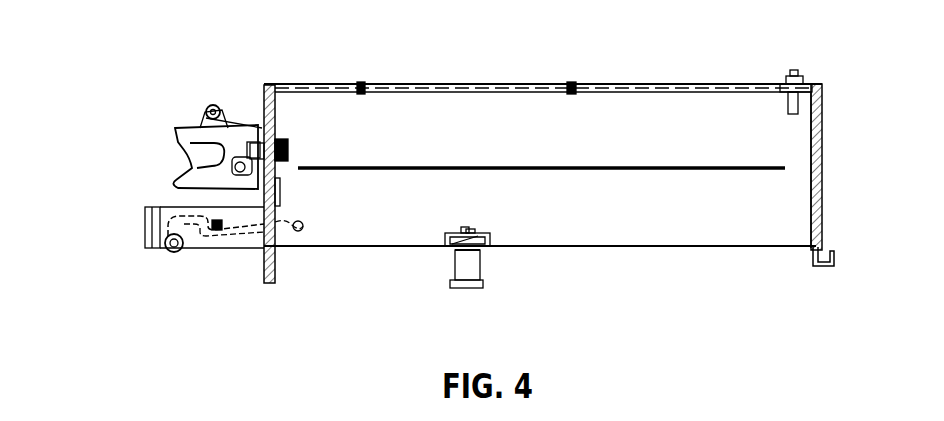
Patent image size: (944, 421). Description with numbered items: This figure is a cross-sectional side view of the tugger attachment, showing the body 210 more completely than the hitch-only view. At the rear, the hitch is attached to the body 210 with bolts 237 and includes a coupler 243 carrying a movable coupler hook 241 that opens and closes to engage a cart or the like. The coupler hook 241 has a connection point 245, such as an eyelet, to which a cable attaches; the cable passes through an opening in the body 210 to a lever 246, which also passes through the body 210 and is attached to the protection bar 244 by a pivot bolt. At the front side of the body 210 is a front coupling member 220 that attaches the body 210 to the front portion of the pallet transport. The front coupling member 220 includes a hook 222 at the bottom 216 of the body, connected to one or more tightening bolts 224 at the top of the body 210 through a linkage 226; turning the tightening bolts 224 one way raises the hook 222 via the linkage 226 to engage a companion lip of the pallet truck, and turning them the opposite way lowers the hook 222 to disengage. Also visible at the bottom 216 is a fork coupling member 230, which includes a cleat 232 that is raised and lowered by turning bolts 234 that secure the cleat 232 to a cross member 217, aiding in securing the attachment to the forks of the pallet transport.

The body 210 is at (360, 127).
The bottom 216 is at (358, 247).
The cross member 217 is at (447, 232).
The front coupling member 220 is at (843, 65).
The hook 222 is at (808, 259).
The tightening bolts 224 is at (800, 76).
The linkage 226 is at (811, 184).
The fork coupling member 230 is at (438, 277).
The cleat 232 is at (486, 284).
The bolts 234 is at (470, 226).
The bolts 237 is at (208, 111).
The coupler hook 241 is at (186, 150).
The coupler 243 is at (246, 140).
The protection bar 244 is at (147, 222).
The connection point 245 is at (205, 116).
The lever 246 is at (197, 230).